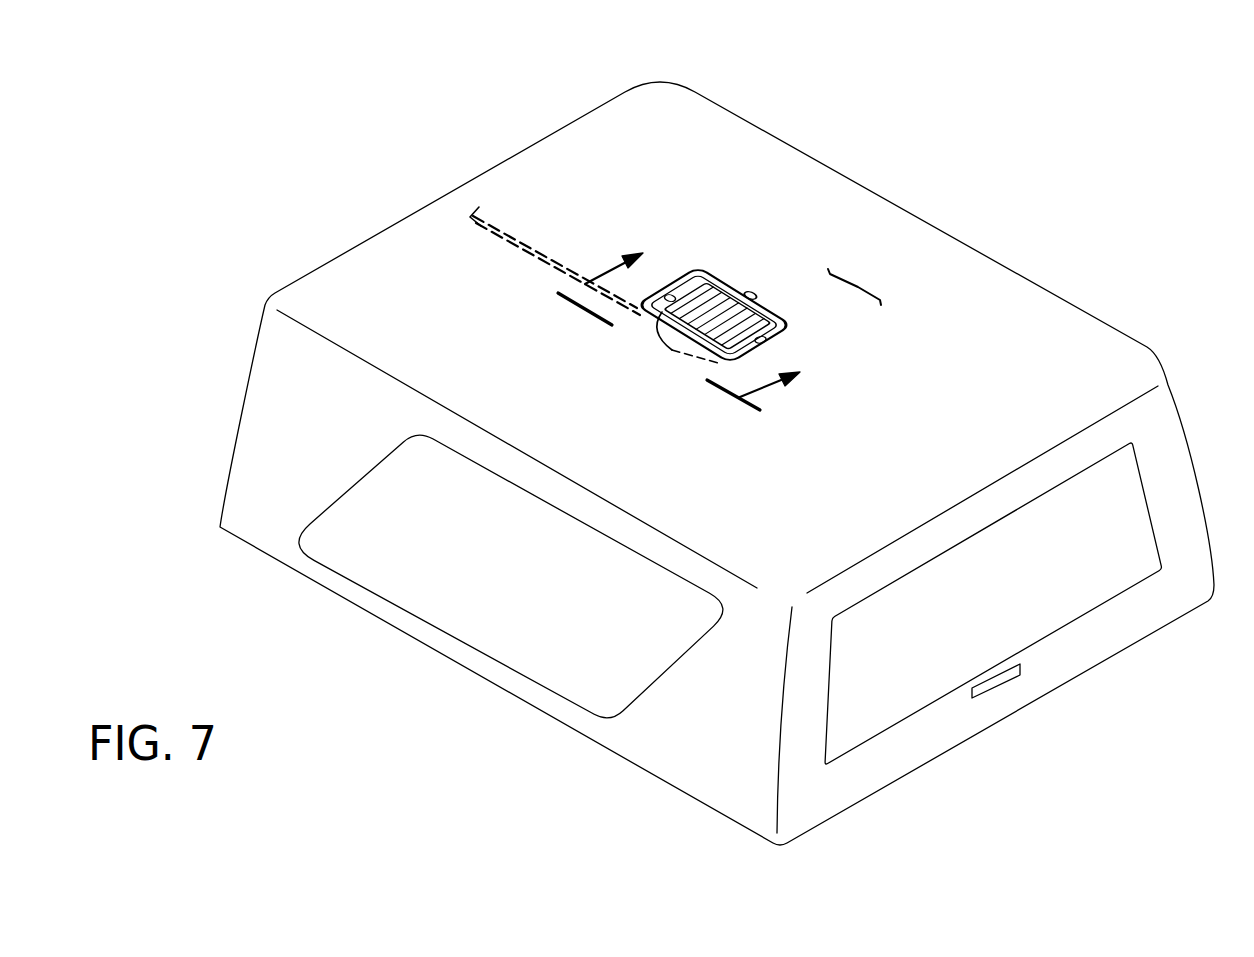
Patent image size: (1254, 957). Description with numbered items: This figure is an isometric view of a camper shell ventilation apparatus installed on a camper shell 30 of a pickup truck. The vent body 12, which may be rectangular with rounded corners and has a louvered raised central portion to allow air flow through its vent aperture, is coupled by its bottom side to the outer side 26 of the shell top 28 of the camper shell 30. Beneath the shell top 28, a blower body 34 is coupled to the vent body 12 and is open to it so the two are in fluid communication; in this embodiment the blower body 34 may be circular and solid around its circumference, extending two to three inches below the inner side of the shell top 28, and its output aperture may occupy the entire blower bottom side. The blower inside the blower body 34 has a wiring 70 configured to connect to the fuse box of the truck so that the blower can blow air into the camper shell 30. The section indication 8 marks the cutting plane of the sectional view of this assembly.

The vent body 12 is at (713, 272).
The outer side 26 is at (858, 280).
The shell top 28 is at (980, 327).
The camper shell 30 is at (1063, 307).
The blower body 34 is at (687, 352).
The wiring 70 is at (508, 233).
The section line 8- 8 is at (697, 314).